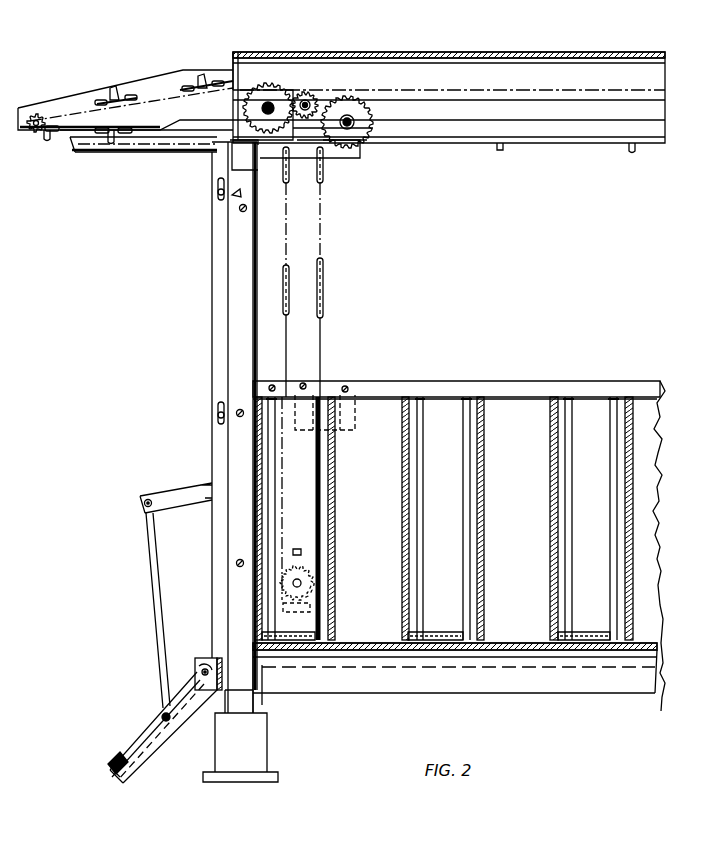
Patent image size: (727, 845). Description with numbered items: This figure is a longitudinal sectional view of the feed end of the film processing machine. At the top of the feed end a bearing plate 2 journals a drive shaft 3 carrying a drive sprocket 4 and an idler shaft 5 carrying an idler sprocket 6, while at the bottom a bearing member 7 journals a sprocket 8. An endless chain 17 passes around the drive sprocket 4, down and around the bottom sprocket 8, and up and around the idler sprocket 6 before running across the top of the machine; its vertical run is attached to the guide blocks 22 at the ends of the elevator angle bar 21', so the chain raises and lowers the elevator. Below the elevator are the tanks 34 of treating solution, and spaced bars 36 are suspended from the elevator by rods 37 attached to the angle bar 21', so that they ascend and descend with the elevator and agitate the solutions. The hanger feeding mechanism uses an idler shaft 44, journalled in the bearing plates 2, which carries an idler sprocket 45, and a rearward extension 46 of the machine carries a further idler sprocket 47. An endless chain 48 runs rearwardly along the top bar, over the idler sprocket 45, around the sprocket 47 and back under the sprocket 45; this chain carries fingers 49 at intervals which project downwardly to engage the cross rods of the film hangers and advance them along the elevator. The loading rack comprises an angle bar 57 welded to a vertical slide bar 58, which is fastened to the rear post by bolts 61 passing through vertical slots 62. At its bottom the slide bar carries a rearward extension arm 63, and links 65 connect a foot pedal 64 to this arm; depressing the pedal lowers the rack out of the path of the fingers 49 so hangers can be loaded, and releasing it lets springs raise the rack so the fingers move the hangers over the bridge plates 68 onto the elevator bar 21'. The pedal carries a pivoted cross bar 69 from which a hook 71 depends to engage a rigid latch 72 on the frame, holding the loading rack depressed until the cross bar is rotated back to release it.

The bearing plate 2 is at (360, 158).
The drive shaft 3 is at (347, 130).
The drive sprocket 4 is at (360, 112).
The idler shaft 5 is at (312, 128).
The idler sprocket 6 is at (310, 99).
The bearing member 7 is at (331, 627).
The sprocket 8 is at (297, 566).
The endless chain 17 is at (540, 96).
The elevator angle bar 21' is at (456, 375).
The block 22 is at (279, 452).
The tank 34 is at (322, 471).
The spaced bar 36 is at (583, 632).
The rod 37 is at (612, 500).
The idler shaft 44 is at (262, 108).
The idler sprocket 45 is at (268, 84).
The extension 46 is at (148, 92).
The idler sprocket 47 is at (36, 114).
The endless chain 48 is at (218, 85).
The finger 49 is at (112, 143).
The angle bar 57 is at (150, 152).
The vertical slide bar 58 is at (218, 327).
The bolt 61 is at (218, 192).
The vertical slot 62 is at (223, 193).
The extension arm 63 is at (183, 494).
The foot pedal 64 is at (119, 752).
The link 65 is at (154, 600).
The bridge plate 68 is at (252, 145).
The pivoted cross bar 69 is at (110, 764).
The hook 71 is at (118, 776).
The rigid latch 72 is at (152, 740).